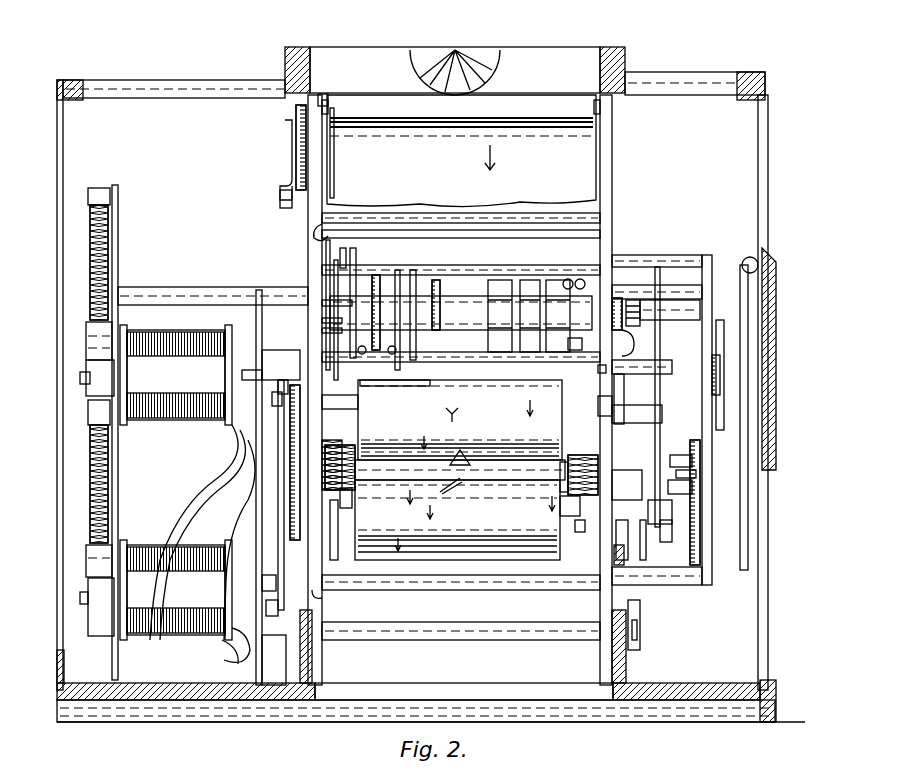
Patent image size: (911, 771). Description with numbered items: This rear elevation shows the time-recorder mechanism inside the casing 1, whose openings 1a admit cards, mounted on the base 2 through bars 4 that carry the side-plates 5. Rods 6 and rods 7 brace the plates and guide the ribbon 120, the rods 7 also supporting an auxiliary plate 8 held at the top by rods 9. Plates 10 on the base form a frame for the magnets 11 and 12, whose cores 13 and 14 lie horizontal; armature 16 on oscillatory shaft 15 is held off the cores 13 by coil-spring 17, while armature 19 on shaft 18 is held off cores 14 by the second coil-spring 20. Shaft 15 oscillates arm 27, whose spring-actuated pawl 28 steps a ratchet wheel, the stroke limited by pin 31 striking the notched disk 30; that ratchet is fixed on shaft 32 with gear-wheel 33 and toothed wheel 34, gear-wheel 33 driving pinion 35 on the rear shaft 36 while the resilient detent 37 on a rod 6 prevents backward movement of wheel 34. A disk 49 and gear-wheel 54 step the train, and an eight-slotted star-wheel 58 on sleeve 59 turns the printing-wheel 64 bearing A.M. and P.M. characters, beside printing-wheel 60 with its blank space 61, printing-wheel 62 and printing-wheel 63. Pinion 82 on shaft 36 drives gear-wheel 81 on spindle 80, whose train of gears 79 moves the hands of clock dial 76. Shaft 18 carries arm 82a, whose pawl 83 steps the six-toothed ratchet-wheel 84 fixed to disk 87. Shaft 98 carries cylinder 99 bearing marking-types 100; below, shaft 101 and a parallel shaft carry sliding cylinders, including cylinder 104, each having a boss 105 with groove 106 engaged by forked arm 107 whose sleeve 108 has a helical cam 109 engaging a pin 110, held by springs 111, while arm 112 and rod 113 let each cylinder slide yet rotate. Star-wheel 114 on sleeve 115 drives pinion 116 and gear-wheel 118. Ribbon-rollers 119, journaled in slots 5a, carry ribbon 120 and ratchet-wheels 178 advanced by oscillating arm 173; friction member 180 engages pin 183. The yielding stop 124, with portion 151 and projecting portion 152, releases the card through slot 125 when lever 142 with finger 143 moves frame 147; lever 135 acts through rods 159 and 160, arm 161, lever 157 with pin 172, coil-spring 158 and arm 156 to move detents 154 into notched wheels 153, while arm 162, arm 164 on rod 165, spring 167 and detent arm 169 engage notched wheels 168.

The casing 1 is at (756, 150).
The openings 1a is at (513, 82).
The base 2 is at (771, 704).
The transverse bars 4 is at (626, 670).
The side-plates 5 is at (310, 252).
The slots 5a is at (607, 88).
The rods 6 is at (510, 214).
The rods 7 is at (668, 586).
The auxiliary vertical plate 8 is at (712, 524).
The rods 9 is at (646, 256).
The vertical plates 10 is at (258, 290).
The magnet 11 is at (176, 375).
The magnet 12 is at (185, 602).
The cores 13 is at (100, 378).
The cores 14 is at (101, 607).
The oscillatory shaft 15 is at (82, 380).
The armature 16 is at (86, 334).
The coil-spring 17 is at (90, 250).
The shaft 18 is at (270, 575).
The armature 19 is at (86, 562).
The coil-spring 20 is at (90, 482).
The arm 27 is at (372, 398).
The pawl 28 is at (314, 236).
The notched disk 30 is at (322, 314).
The pin 31 is at (334, 292).
The shaft 32 is at (466, 264).
The gear-wheel 33 is at (350, 256).
The toothed wheel 34 is at (358, 265).
The pinion 35 is at (324, 332).
The rear shaft 36 is at (322, 322).
The resilient detent 37 is at (362, 232).
The disk 49 is at (387, 310).
The gear-wheel 54 is at (400, 280).
The star-wheel 58 is at (432, 288).
The sleeve 59 is at (461, 313).
The printing-wheel 60 is at (584, 343).
The blank space 61 is at (572, 294).
The printing-wheel 62 is at (556, 278).
The printing-wheel 63 is at (530, 278).
The printing-wheel 64 is at (502, 278).
The clock dial 76 is at (748, 322).
The train of gears 79 is at (722, 382).
The spindle 80 is at (642, 363).
The gear-wheel 81 is at (624, 396).
The pinion 82 is at (634, 300).
The arm 82a is at (646, 552).
The pawl 83 is at (606, 440).
The ratchet-wheel 84 is at (622, 488).
The disk 87 is at (622, 540).
The shaft 98 is at (340, 418).
The cylinder 99 is at (460, 420).
The marking-types 100 is at (458, 413).
The shaft 101 is at (344, 530).
The cylinder 104 is at (457, 520).
The hollow boss 105 is at (589, 535).
The circumferential groove 106 is at (560, 508).
The arm 107 is at (560, 484).
The hollow sleeve 108 is at (512, 478).
The helical cams 109 is at (433, 492).
The pins 110 is at (488, 446).
The springs 111 is at (338, 440).
The arm 112 is at (352, 508).
The rod 113 is at (352, 488).
The star-wheel 114 is at (692, 490).
The sleeve 115 is at (690, 462).
The pinion 116 is at (696, 478).
The gear-wheel 118 is at (702, 556).
The ribbon-rollers 119 is at (594, 106).
The ribbon 120 is at (461, 151).
The yielding stop 124 is at (290, 510).
The slot 125 is at (477, 695).
The manually-operated lever 135 is at (300, 665).
The manually-operated lever 142 is at (642, 628).
The finger 143 is at (614, 560).
The frame 147 is at (446, 640).
The portion 151 is at (278, 526).
The projecting portion 152 is at (324, 600).
The notched wheels 153 is at (442, 292).
The detents 154 is at (420, 392).
The arm 156 is at (262, 374).
The lever 157 is at (290, 398).
The coil-spring 158 is at (300, 462).
The rod 159 is at (300, 481).
The rod 160 is at (280, 440).
The arm 161 is at (290, 630).
The arm 162 is at (600, 372).
The arm 164 is at (618, 296).
The oscillatory rod 165 is at (709, 250).
The coil-spring 167 is at (634, 344).
The notched wheels 168 is at (668, 534).
The detent arm 169 is at (662, 377).
The pin 172 is at (272, 398).
The oscillating arm 173 is at (305, 200).
The ratchet-wheels 178 is at (296, 150).
The friction member 180 is at (326, 100).
The pin 183 is at (334, 125).